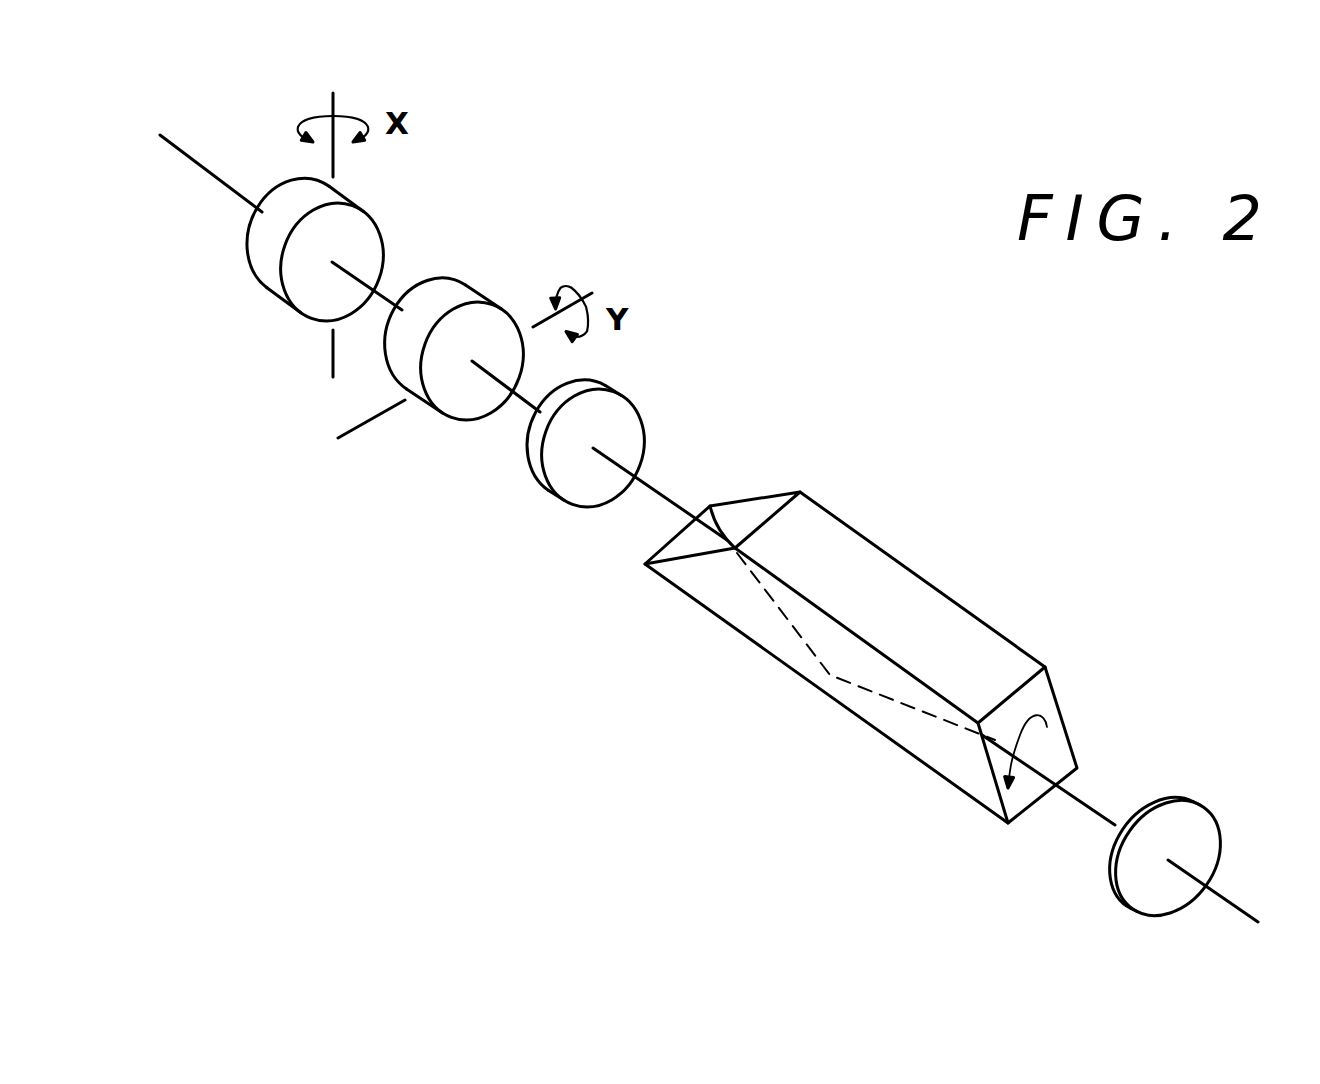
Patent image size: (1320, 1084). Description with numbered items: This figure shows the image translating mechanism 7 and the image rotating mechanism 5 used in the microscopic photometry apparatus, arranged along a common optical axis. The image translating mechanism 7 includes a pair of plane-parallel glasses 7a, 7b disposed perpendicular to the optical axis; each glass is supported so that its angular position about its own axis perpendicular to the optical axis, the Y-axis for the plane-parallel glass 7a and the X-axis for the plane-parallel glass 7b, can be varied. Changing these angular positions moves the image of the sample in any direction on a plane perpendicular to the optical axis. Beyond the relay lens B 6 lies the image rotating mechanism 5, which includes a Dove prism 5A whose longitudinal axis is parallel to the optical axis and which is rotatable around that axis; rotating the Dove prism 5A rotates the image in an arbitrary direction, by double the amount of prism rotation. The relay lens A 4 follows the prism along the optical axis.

The relay lens A 4 is at (1220, 818).
The image rotating mechanism 5 is at (918, 528).
The Dove prism 5A is at (945, 620).
The relay lens B 6 is at (648, 428).
The image translating mechanism 7 is at (532, 158).
The plane-parallel glass 7a is at (432, 417).
The plane-parallel glass 7b is at (267, 262).